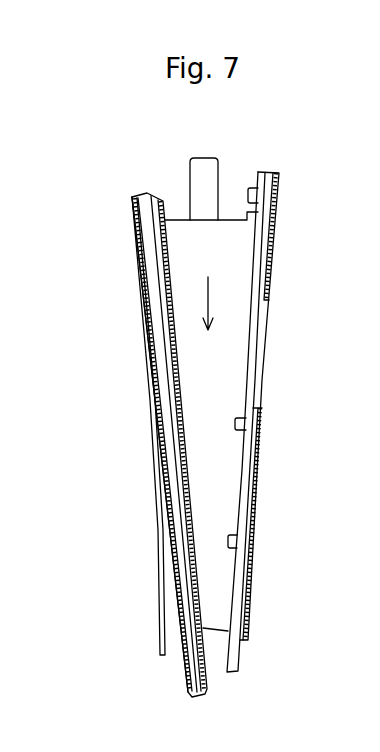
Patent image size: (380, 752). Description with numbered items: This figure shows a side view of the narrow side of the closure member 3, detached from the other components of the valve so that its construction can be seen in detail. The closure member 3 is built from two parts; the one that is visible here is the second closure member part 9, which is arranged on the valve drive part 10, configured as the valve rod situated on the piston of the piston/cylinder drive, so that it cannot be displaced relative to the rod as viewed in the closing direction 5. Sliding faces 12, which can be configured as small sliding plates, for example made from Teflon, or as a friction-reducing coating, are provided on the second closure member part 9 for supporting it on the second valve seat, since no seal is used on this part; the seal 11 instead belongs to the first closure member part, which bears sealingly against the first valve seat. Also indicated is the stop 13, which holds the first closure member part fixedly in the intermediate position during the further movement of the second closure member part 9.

The closure member 3 is at (236, 395).
The closing direction 5 is at (208, 293).
The second closure member part 9 is at (296, 415).
The valve drive part 10 is at (207, 170).
The seal 11 is at (143, 257).
The sliding faces 12 is at (280, 192).
The stop 13 is at (165, 657).